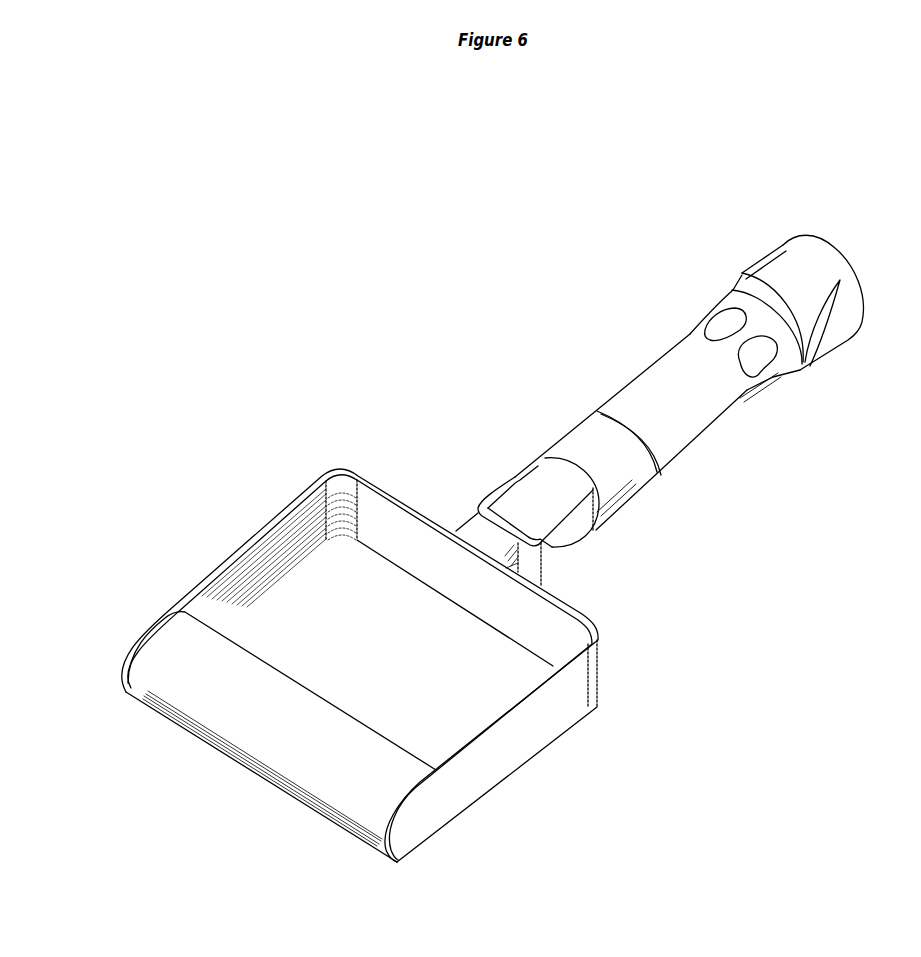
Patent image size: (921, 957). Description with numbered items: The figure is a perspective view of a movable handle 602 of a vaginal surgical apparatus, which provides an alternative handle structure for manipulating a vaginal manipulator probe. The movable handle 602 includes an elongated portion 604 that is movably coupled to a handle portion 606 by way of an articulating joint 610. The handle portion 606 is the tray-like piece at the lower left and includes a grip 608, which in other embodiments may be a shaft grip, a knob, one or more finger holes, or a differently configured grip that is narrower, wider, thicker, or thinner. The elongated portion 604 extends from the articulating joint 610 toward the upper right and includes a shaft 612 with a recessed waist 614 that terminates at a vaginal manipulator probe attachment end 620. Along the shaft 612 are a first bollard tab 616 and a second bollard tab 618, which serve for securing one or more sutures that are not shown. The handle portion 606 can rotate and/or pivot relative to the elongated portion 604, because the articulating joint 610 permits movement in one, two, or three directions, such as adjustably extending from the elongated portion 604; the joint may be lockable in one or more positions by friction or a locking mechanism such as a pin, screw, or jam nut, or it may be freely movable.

The movable handle 602 is at (267, 368).
The elongated portion 604 is at (702, 498).
The handle portion 606 is at (508, 796).
The grip 608 is at (292, 766).
The articulating joint 610 is at (573, 550).
The shaft 612 is at (682, 443).
The recessed waist 614 is at (775, 384).
The first bollard tab 616 is at (843, 320).
The second bollard tab 618 is at (743, 273).
The vaginal manipulator probe attachment end 620 is at (840, 250).